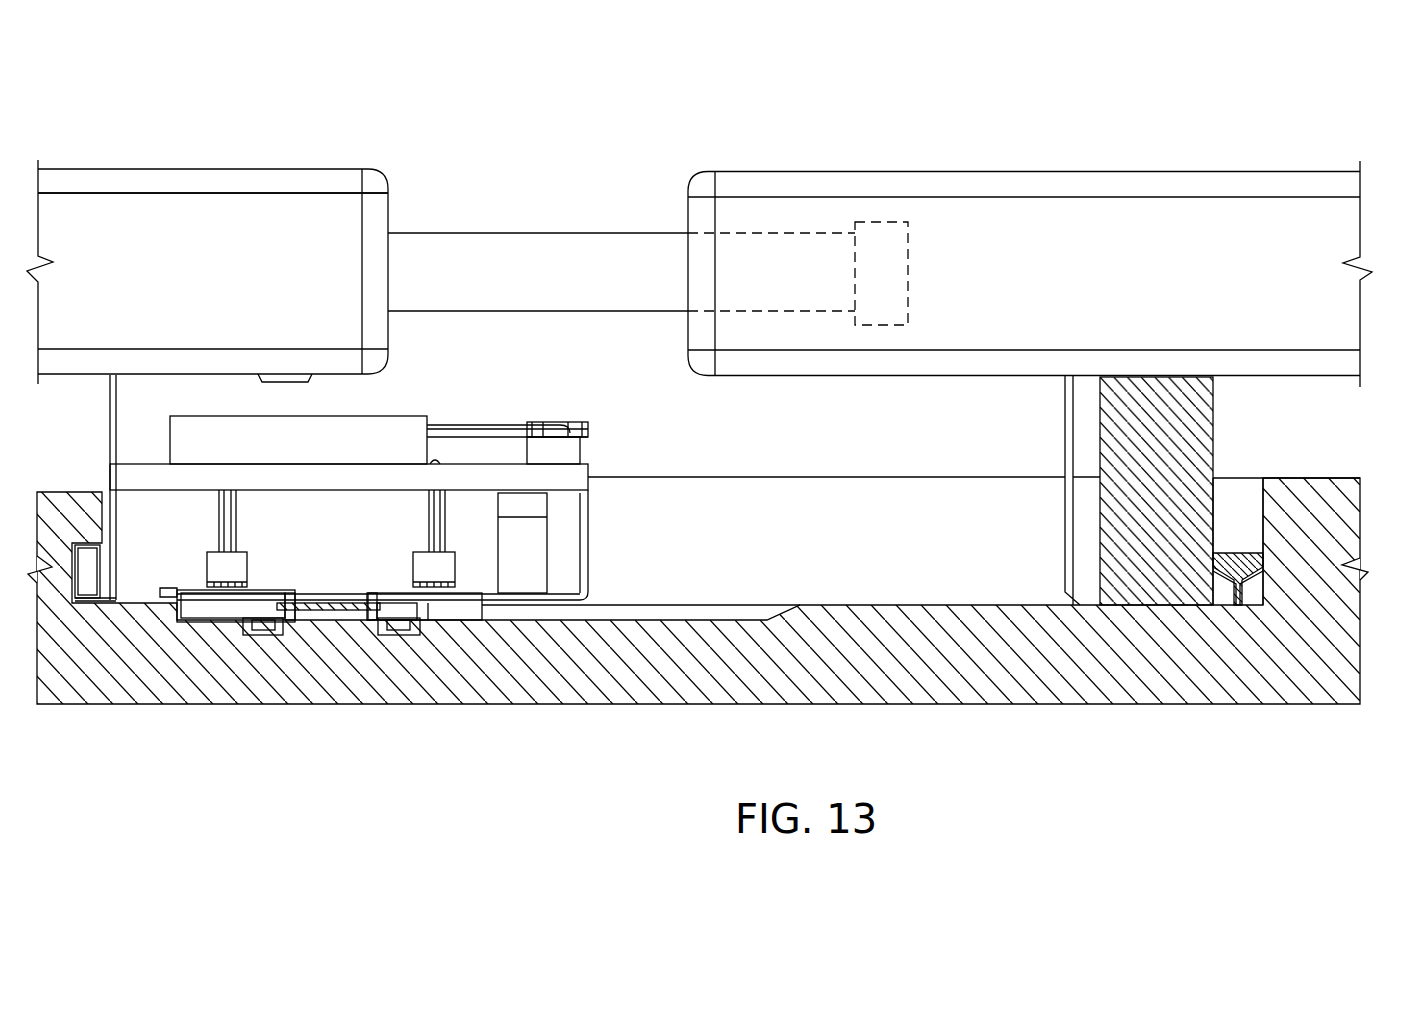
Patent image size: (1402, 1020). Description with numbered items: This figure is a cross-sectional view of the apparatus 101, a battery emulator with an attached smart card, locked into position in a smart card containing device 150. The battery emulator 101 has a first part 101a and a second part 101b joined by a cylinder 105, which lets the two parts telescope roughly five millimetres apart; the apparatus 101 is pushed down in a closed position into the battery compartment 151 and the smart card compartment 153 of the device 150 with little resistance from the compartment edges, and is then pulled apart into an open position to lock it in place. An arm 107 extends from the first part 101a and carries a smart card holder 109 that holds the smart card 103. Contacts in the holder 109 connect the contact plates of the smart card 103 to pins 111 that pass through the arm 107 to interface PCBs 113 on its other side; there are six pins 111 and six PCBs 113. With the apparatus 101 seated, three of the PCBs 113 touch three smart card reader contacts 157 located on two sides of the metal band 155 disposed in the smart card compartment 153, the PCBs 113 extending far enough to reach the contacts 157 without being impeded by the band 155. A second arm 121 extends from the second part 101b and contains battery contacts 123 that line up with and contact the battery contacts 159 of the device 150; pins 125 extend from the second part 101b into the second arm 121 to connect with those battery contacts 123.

The apparatus 101 is at (557, 114).
The first part 101a is at (274, 226).
The second part 101b is at (892, 200).
The smart card 103 is at (495, 432).
The cylinder 105 is at (556, 286).
The arm 107 is at (160, 450).
The smart card holder 109 is at (321, 454).
The pins 111 is at (222, 523).
The interface PCBs 113 is at (281, 594).
The second arm 121 is at (1157, 590).
The battery contacts 123 is at (1230, 608).
The pins 125 is at (1065, 572).
The smart card containing device 150 is at (660, 729).
The battery compartment 151 is at (975, 586).
The smart card compartment 153 is at (745, 608).
The metal band 155 is at (324, 603).
The smart card reader contacts 157 is at (398, 634).
The battery contacts 159 is at (1247, 577).